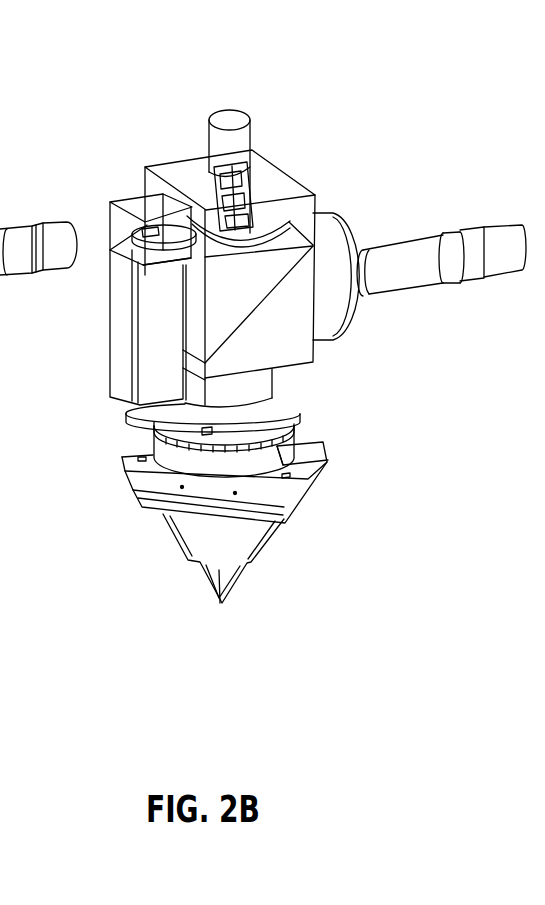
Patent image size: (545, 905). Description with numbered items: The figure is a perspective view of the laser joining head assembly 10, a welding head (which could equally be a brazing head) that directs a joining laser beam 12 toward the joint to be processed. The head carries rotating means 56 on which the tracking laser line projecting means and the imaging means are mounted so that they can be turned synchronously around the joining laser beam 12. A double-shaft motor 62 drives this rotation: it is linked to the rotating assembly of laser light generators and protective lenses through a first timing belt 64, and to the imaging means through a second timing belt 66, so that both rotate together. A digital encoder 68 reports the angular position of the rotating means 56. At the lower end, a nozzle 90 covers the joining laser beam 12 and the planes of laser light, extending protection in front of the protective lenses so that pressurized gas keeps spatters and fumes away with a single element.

The laser joining head assembly 10 is at (296, 52).
The joining laser beam 12 is at (221, 603).
The rotating means 56 is at (118, 372).
The double-shaft motor 62 is at (92, 354).
The first timing belt 64 is at (124, 464).
The second timing belt 66 is at (150, 248).
The digital encoder 68 is at (260, 462).
The nozzle 90 is at (264, 564).